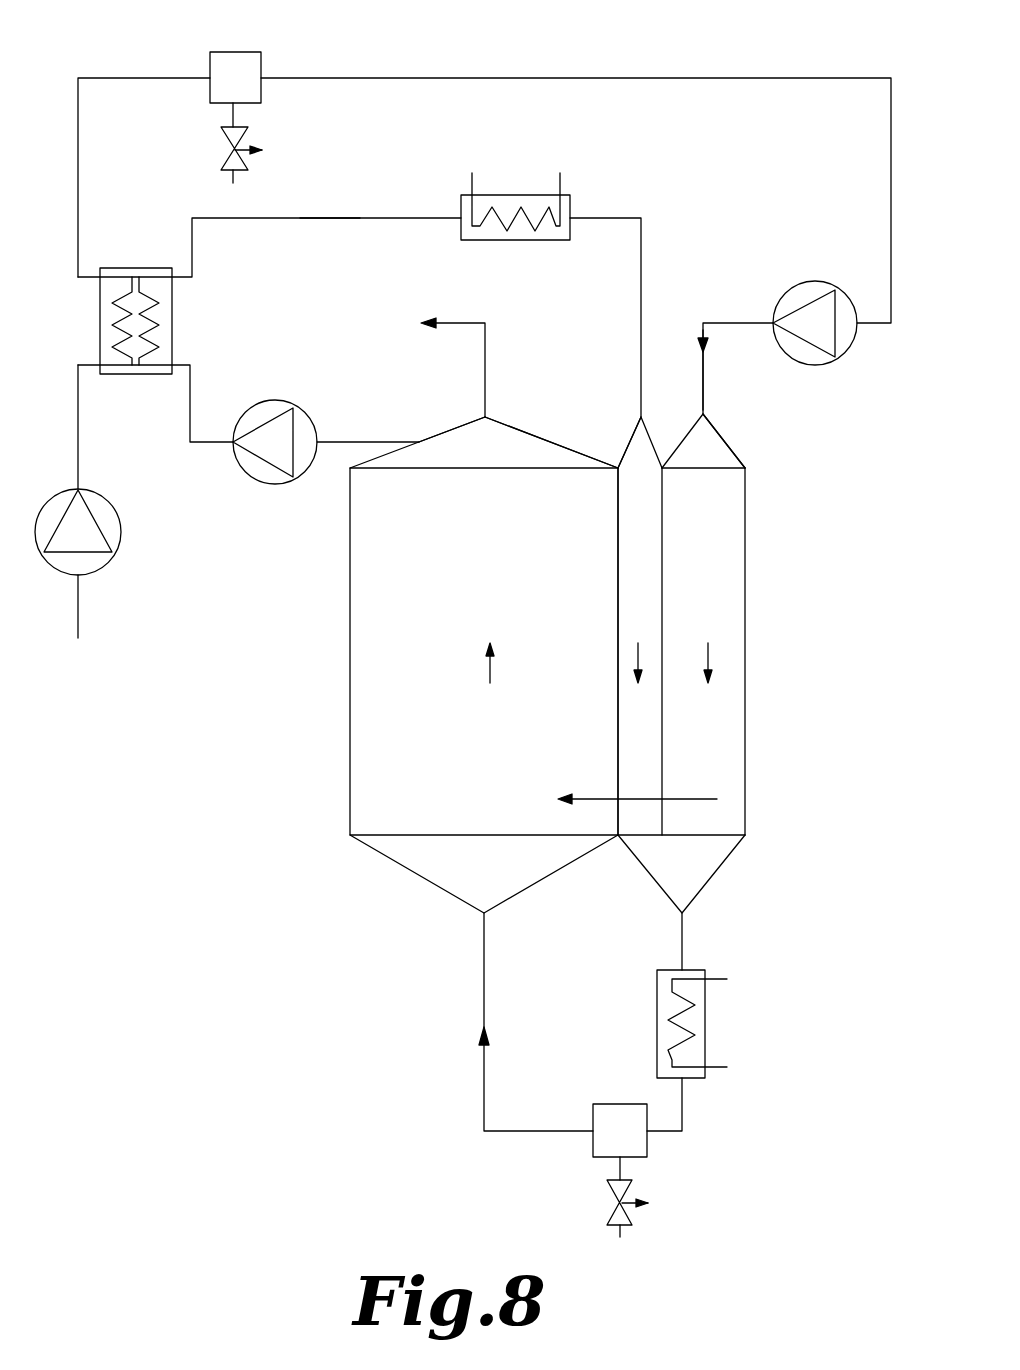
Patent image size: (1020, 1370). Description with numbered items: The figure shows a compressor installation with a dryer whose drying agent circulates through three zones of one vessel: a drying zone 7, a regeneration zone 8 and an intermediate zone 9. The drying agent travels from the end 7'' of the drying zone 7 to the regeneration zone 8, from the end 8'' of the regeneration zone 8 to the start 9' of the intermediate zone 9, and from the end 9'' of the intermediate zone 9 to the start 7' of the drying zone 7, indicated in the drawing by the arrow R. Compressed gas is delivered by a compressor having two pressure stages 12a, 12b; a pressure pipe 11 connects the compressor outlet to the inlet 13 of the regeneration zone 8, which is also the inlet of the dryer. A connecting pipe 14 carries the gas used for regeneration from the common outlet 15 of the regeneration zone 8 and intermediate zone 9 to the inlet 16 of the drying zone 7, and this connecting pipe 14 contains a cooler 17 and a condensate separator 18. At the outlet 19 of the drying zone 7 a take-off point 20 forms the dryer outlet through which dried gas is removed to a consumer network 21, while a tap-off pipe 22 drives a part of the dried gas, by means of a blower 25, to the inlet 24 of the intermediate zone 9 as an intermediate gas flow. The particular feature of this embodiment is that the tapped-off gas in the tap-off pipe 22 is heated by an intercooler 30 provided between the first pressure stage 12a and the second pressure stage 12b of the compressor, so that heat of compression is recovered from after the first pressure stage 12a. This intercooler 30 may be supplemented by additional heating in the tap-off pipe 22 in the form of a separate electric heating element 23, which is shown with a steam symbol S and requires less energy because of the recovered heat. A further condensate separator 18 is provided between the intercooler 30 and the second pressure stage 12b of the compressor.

The drying zone 7 is at (484, 626).
The start of the drying zone 7' is at (594, 654).
The end of the drying zone 7'' is at (427, 662).
The regeneration zone 8 is at (681, 624).
The end of the regeneration zone 8'' is at (681, 628).
The intermediate zone 9 is at (640, 626).
The start of the intermediate zone 9' is at (650, 753).
The end of the intermediate zone 9'' is at (634, 736).
The pressure pipe 11 is at (703, 375).
The first pressure stage 12a is at (108, 540).
The second pressure stage 12b is at (875, 257).
The inlet of the regeneration zone 13 is at (728, 440).
The connecting pipe 14 is at (480, 1108).
The common outlet 15 is at (720, 880).
The inlet of the drying zone 16 is at (427, 885).
The cooler 17 is at (700, 1023).
The condensate separator 18 is at (245, 88).
The outlet of the drying zone 19 is at (513, 428).
The take-off point 20 is at (485, 417).
The consumer network 21 is at (453, 355).
The tap-off pipe 22 is at (328, 212).
The heating element 23 is at (540, 230).
The inlet of the intermediate zone 24 is at (655, 447).
The blower 25 is at (272, 472).
The intercooler 30 is at (110, 320).
The recirculation flow R is at (626, 803).
The steam S is at (530, 176).